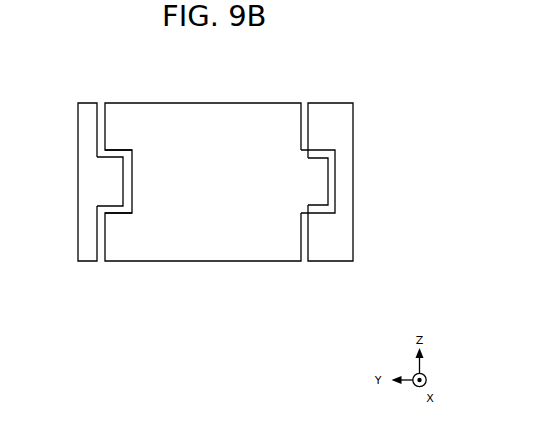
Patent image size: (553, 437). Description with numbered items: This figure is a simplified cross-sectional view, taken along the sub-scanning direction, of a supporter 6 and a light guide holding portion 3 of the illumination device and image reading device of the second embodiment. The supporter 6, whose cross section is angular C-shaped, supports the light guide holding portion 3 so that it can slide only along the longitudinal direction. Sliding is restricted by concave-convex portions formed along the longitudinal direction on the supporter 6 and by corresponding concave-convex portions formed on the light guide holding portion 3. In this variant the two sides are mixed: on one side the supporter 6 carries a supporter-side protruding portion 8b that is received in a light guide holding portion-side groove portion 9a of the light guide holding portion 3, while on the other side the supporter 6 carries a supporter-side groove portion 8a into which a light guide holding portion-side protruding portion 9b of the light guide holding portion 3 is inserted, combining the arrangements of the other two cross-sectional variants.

The light guide holding portion 3 is at (193, 138).
The supporter 6 is at (87, 142).
The supporter-side groove portion 8a is at (333, 187).
The supporter-side protruding portion 8b is at (108, 182).
The light guide holding portion-side groove portion 9a is at (133, 190).
The light guide holding portion-side protruding portion 9b is at (310, 187).